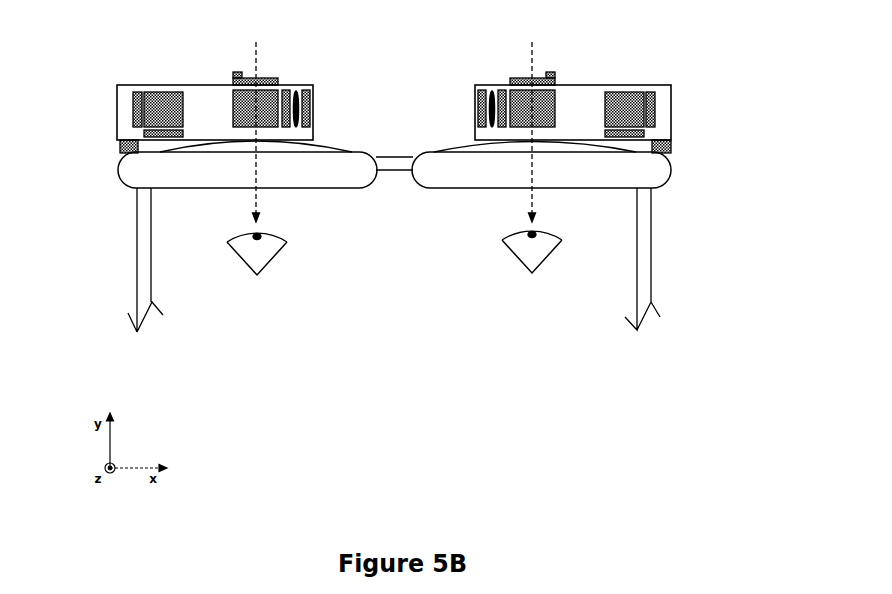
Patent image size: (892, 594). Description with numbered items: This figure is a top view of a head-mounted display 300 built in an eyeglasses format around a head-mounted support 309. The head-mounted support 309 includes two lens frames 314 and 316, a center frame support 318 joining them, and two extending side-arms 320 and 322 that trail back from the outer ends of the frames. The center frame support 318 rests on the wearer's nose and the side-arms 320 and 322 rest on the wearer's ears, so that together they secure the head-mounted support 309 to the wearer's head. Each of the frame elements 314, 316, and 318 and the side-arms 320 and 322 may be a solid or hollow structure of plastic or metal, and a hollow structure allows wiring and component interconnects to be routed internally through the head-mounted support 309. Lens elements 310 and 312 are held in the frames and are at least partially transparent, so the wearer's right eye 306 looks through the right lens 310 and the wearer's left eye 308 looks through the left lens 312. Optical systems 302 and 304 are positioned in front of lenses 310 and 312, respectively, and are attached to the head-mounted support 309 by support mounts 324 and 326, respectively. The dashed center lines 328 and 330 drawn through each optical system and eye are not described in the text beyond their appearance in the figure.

The head-mounted display 300 is at (388, 292).
The optical system 302 is at (590, 82).
The optical system 304 is at (178, 82).
The right eye 306 is at (520, 265).
The left eye 308 is at (270, 265).
The head-mounted support 309 is at (371, 82).
The lens element 310 is at (458, 146).
The lens element 312 is at (325, 146).
The lens frame 314 is at (600, 190).
The lens frame 316 is at (190, 190).
The center frame support 318 is at (397, 172).
The extending side-arm 320 is at (652, 255).
The extending side-arm 322 is at (137, 255).
The support mount 324 is at (672, 155).
The support mount 326 is at (122, 155).
The right optical axis 328 is at (530, 68).
The left optical axis 330 is at (258, 65).